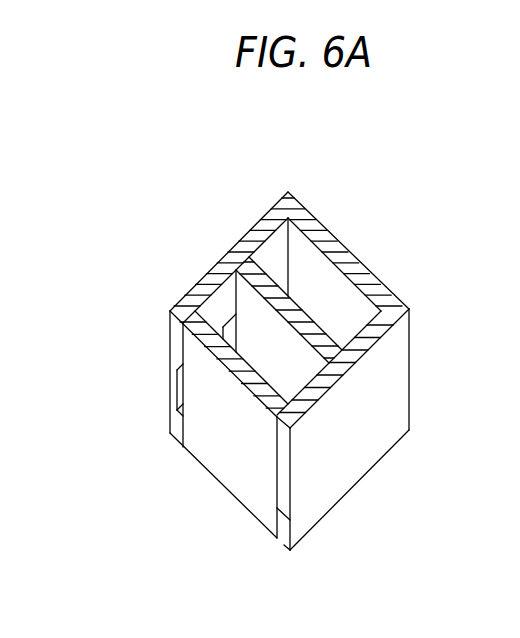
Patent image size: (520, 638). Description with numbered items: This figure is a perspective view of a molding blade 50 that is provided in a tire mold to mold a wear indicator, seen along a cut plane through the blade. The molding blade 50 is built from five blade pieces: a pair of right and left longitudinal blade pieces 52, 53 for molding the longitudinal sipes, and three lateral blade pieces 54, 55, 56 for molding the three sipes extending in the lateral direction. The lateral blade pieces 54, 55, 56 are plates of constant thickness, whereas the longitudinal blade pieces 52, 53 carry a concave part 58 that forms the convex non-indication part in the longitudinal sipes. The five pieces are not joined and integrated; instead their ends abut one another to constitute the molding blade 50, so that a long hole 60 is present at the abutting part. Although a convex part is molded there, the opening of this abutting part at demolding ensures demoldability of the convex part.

The molding blade 50 is at (331, 177).
The left longitudinal blade piece 52 is at (212, 267).
The right longitudinal blade piece 53 is at (355, 445).
The lateral blade piece 54 is at (353, 262).
The lateral blade piece 55 is at (310, 315).
The lateral blade piece 56 is at (228, 442).
The concave part 58 is at (228, 335).
The long hole 60 is at (177, 388).